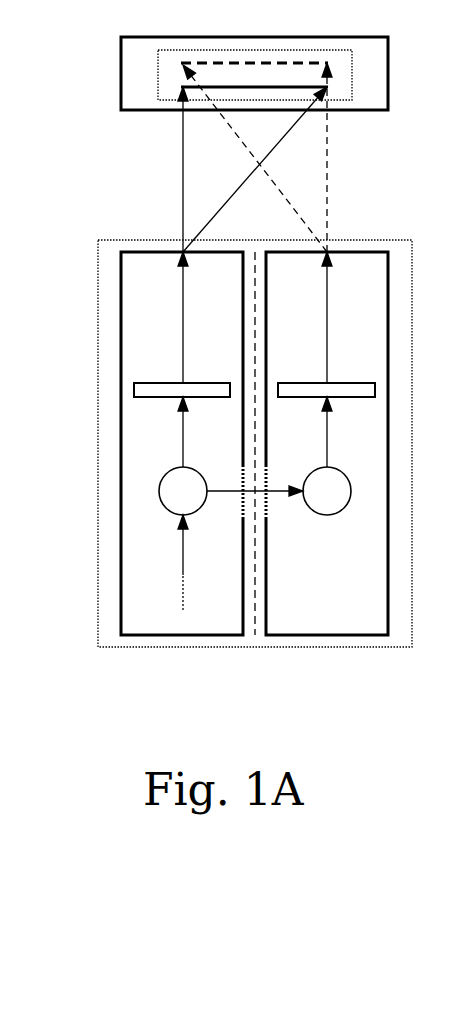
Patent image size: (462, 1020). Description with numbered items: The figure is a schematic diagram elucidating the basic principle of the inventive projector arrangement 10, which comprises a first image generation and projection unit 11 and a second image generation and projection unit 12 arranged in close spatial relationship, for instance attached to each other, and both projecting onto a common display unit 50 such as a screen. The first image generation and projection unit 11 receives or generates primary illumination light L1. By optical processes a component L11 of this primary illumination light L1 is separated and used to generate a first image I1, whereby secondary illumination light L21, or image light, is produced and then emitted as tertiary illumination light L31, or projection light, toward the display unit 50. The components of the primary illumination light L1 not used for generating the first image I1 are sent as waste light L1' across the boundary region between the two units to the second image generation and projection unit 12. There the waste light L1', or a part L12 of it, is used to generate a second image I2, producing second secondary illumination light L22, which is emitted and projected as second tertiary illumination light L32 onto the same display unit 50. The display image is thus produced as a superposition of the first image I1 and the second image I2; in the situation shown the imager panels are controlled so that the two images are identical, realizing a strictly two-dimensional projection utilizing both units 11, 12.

The projector arrangement 10 is at (233, 443).
The first image generation and projection unit 11 is at (182, 469).
The second image generation and projection unit 12 is at (327, 470).
The display unit 50 is at (232, 88).
The first image I1 is at (182, 377).
The second image I2 is at (326, 377).
The primary illumination light L1 is at (168, 562).
The waste light L1' is at (255, 514).
The component of primary illumination light L11 is at (162, 432).
The part of waste light L12 is at (347, 432).
The secondary illumination light L21 is at (162, 317).
The second secondary illumination light L22 is at (347, 317).
The tertiary illumination light L31 is at (162, 169).
The second tertiary illumination light L32 is at (343, 157).